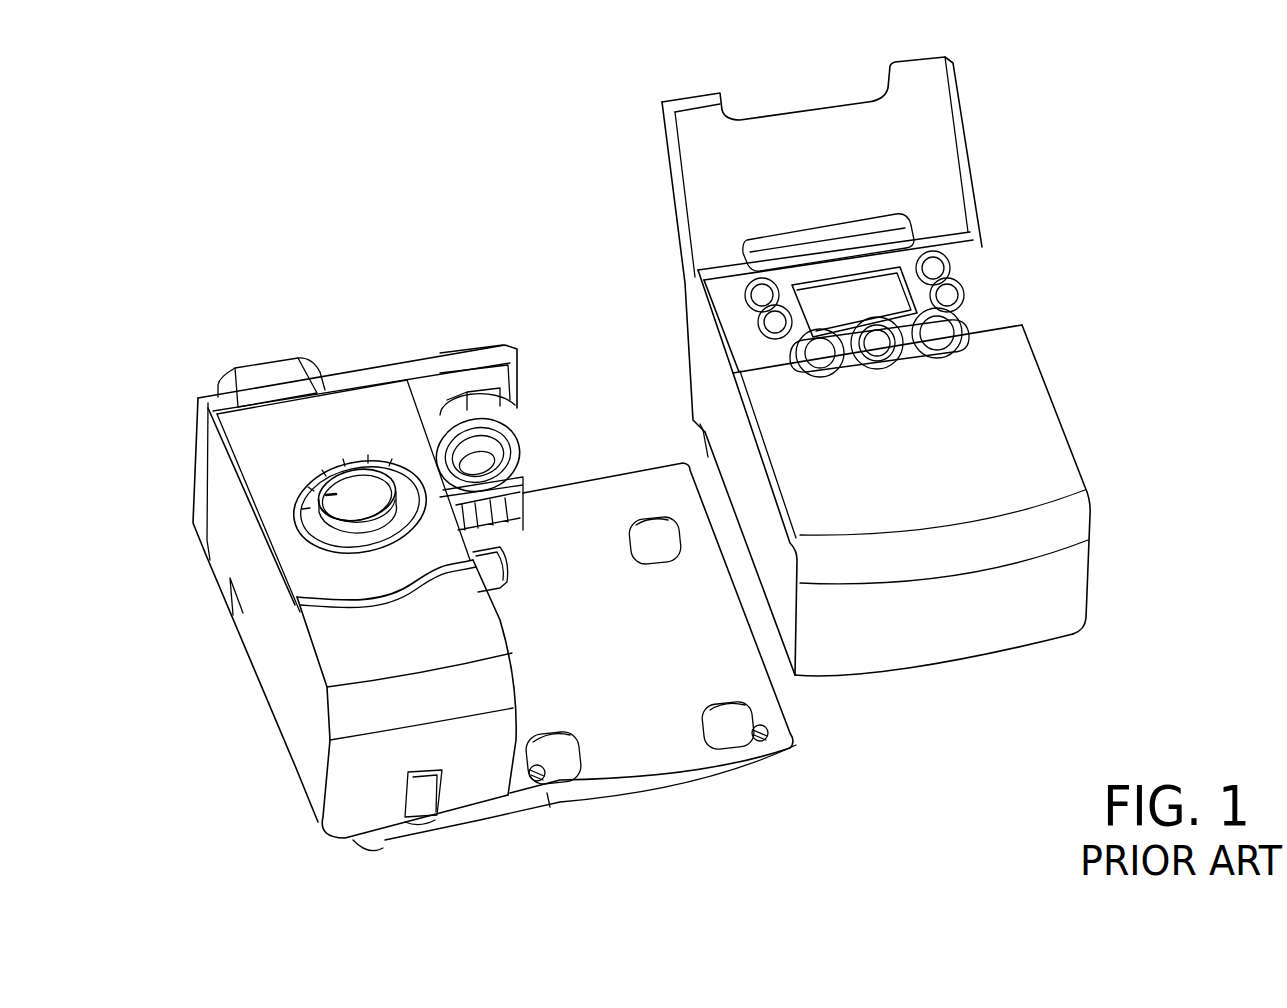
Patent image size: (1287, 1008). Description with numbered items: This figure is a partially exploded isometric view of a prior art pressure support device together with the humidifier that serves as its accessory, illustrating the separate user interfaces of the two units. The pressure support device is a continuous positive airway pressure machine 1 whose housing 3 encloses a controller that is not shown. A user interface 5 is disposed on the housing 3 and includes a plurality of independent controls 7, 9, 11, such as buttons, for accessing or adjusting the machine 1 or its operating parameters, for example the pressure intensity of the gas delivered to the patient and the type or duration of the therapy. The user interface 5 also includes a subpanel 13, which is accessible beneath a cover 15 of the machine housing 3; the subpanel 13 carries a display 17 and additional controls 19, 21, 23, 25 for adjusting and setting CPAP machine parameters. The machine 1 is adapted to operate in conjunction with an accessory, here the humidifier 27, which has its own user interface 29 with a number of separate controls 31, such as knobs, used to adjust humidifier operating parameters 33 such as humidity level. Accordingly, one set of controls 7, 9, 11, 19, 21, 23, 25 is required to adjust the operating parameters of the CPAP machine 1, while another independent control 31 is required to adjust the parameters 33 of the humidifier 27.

The CPAP machine 1 is at (686, 454).
The housing 3 is at (1048, 443).
The user interface 5 is at (888, 366).
The control 7 is at (822, 355).
The control 9 is at (877, 345).
The control 11 is at (935, 335).
The subpanel 13 is at (852, 297).
The cover 15 is at (940, 144).
The display 17 is at (852, 290).
The additional control 19 is at (758, 296).
The additional control 21 is at (770, 322).
The additional control 23 is at (948, 262).
The additional control 25 is at (958, 294).
The humidifier 27 is at (455, 556).
The user interface 29 is at (256, 464).
The control 31 is at (370, 505).
The humidifier operating parameter 33 is at (352, 420).